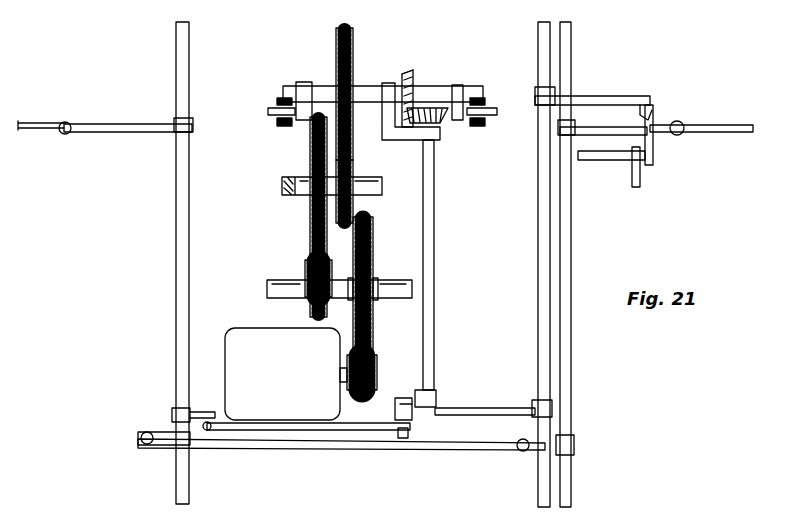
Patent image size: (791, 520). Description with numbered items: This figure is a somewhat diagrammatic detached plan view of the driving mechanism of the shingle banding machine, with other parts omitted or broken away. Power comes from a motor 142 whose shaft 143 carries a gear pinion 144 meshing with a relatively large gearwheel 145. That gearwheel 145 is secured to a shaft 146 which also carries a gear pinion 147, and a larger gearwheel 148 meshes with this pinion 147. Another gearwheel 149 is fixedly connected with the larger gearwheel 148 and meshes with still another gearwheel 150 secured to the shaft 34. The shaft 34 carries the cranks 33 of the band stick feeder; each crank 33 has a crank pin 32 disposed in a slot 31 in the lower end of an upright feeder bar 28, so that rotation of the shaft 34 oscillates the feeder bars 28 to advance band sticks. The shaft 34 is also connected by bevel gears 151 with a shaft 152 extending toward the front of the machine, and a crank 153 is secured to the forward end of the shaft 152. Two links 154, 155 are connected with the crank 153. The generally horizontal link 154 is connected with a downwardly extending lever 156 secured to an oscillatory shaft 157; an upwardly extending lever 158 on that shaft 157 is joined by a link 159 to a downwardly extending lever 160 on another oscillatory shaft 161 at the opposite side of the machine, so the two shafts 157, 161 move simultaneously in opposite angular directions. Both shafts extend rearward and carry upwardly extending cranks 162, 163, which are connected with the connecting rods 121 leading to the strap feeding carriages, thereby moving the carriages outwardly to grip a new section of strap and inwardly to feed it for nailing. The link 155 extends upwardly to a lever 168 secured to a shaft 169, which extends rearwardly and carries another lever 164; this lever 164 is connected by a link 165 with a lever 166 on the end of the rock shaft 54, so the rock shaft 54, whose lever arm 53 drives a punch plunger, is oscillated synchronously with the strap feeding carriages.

The connecting rod 121 is at (52, 123).
The upwardly extending crank 162 is at (122, 125).
The feeder bar 28 is at (283, 99).
The slot 31 is at (270, 104).
The crank pin 32 is at (274, 112).
The crank 33 is at (298, 120).
The gearwheel 150 is at (336, 42).
The shaft 34 is at (364, 88).
The bevel gears 151 is at (410, 80).
The gearwheel 149 is at (353, 166).
The shaft 152 is at (434, 233).
The larger gearwheel 148 is at (310, 241).
The shaft 146 is at (268, 288).
The gear pinion 147 is at (310, 311).
The gearwheel 145 is at (378, 325).
The motor 142 is at (282, 374).
The shaft 143 is at (340, 375).
The gear pinion 144 is at (377, 372).
The oscillatory shaft 157 is at (176, 367).
The downwardly extending lever 156 is at (188, 410).
The upwardly extending lever 158 is at (160, 432).
The link 159 is at (286, 450).
The link 154 is at (352, 432).
The crank 153 is at (403, 440).
The link 155 is at (395, 412).
The lever 168 is at (485, 408).
The downwardly extending lever 160 is at (520, 450).
The oscillatory shaft 161 is at (571, 392).
The shaft 169 is at (538, 311).
The lever 164 is at (602, 96).
The link 165 is at (648, 112).
The upwardly extending crank 163 is at (603, 132).
The lever 166 is at (653, 140).
The rock shaft 54 is at (608, 160).
The lever arm 53 is at (640, 175).